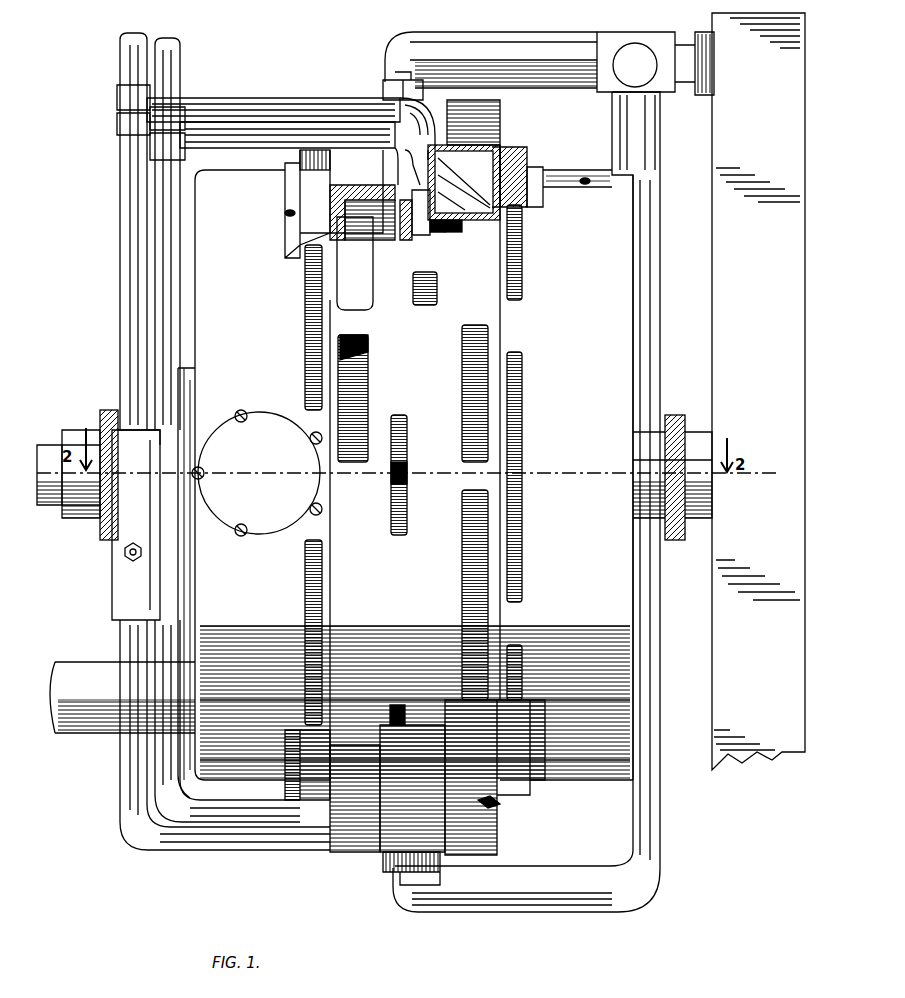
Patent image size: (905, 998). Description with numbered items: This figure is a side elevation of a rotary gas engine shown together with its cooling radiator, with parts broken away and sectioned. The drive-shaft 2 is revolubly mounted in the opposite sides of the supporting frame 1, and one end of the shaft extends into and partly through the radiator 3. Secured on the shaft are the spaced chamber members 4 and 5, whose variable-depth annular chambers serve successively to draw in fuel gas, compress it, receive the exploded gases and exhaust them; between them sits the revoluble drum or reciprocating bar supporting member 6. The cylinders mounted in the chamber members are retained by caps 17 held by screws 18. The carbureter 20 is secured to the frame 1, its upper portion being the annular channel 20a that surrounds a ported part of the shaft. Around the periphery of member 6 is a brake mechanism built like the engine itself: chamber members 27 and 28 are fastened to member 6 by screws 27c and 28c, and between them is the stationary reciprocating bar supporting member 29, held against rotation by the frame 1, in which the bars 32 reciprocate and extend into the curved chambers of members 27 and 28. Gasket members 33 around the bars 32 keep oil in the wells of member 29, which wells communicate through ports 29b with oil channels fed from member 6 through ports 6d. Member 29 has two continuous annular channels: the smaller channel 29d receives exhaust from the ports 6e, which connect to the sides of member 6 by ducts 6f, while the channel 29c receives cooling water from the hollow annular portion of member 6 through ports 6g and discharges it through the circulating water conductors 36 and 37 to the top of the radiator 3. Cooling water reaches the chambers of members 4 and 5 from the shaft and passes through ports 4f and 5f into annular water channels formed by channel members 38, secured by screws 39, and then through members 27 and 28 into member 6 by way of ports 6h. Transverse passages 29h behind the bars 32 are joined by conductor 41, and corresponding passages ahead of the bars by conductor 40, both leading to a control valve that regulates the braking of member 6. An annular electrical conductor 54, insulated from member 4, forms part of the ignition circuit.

The supporting frame 1 is at (100, 530).
The drive-shaft 2 is at (52, 505).
The radiator 3 is at (758, 391).
The chamber member 4 is at (404, 484).
The port 4f is at (304, 330).
The chamber member 5 is at (566, 462).
The port 5f is at (522, 388).
The reciprocating bar supporting member 6 is at (364, 498).
The ports 6d is at (455, 232).
The exhaust ports 6e is at (430, 306).
The ducts 6f is at (368, 360).
The ports 6g is at (407, 428).
The ports 6h is at (368, 394).
The caps 17 is at (259, 473).
The screws 18 is at (245, 410).
The carbureter 20 is at (112, 568).
The annular channel 20a is at (130, 432).
The chamber member 27 is at (335, 864).
The screws 27c is at (345, 98).
The chamber member 28 is at (500, 118).
The screws 28c is at (500, 806).
The reciprocating bar supporting member 29 is at (393, 840).
The ports 29b is at (445, 232).
The annular channel 29c is at (375, 228).
The annular channel 29d is at (406, 240).
The transverse passages 29h is at (460, 160).
The bars 32 is at (498, 160).
The gasket members 33 is at (420, 228).
The circulating water conductor 36 is at (520, 58).
The circulating water conductor 37 is at (660, 135).
The channel members 38 is at (310, 148).
The screws 39 is at (560, 178).
The conductor 40 is at (272, 98).
The conductor 41 is at (233, 122).
The annular electrical conductor 54 is at (192, 380).